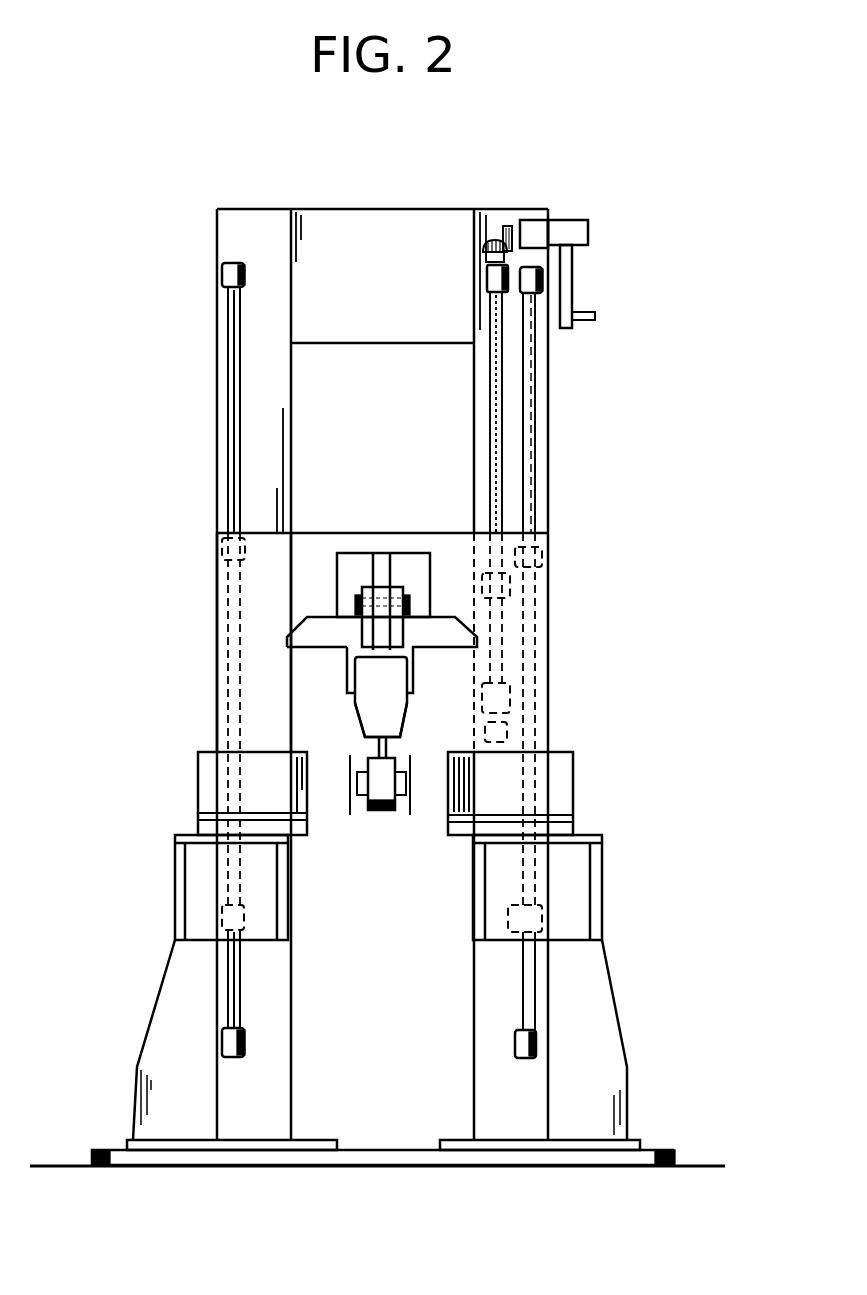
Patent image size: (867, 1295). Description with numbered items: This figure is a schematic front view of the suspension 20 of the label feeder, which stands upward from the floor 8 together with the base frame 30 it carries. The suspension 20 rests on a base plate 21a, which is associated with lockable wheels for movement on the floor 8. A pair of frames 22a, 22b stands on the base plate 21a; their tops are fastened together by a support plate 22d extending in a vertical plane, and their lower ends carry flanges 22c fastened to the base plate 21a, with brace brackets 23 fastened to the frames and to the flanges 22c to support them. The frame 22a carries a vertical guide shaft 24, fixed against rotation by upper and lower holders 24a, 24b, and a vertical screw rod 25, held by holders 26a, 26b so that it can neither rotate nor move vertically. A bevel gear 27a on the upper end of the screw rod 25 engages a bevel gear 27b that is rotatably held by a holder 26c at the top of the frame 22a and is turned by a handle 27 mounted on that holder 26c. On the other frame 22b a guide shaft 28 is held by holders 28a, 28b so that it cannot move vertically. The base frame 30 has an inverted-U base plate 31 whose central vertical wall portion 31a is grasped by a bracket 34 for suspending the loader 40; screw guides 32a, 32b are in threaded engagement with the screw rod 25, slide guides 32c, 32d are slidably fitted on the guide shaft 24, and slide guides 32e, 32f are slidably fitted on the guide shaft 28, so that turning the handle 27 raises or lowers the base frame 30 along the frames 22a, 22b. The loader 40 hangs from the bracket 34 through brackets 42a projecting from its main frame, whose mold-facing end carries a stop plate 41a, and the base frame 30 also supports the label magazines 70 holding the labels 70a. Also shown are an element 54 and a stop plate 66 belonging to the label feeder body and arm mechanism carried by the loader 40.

The floor 8 is at (418, 1160).
The suspension 20 is at (556, 197).
The base plate 21a is at (658, 1155).
The frame 22a is at (545, 383).
The frame 22b is at (222, 375).
The flange 22c is at (305, 1140).
The support plate 22d is at (345, 245).
The brace bracket 23 is at (185, 1000).
The guide shaft 24 is at (530, 465).
The holder 24a is at (530, 280).
The holder 24b is at (532, 1040).
The screw rod 25 is at (492, 370).
The holder 26a is at (495, 275).
The holder 26b is at (505, 735).
The holder 26c is at (540, 235).
The handle 27 is at (568, 275).
The bevel gear 27a is at (493, 240).
The bevel gear 27b is at (508, 228).
The guide shaft 28 is at (233, 405).
The holder 28a is at (228, 273).
The holder 28b is at (225, 1045).
The base frame 30 is at (330, 600).
The base plate 31 is at (255, 640).
The central vertical wall portion 31a is at (347, 540).
The screw guide 32a is at (505, 585).
The screw guide 32b is at (500, 700).
The slide guide 32c is at (535, 555).
The slide guide 32d is at (535, 915).
The slide guide 32e is at (228, 548).
The slide guide 32f is at (230, 912).
The bracket 34 is at (385, 580).
The loader 40 is at (372, 708).
The stop plate 41a is at (395, 712).
The bracket 42a is at (362, 648).
The connecting shaft 54 is at (390, 752).
The stop plate 66 is at (383, 812).
The label magazine 70 is at (245, 785).
The label 70a is at (352, 765).